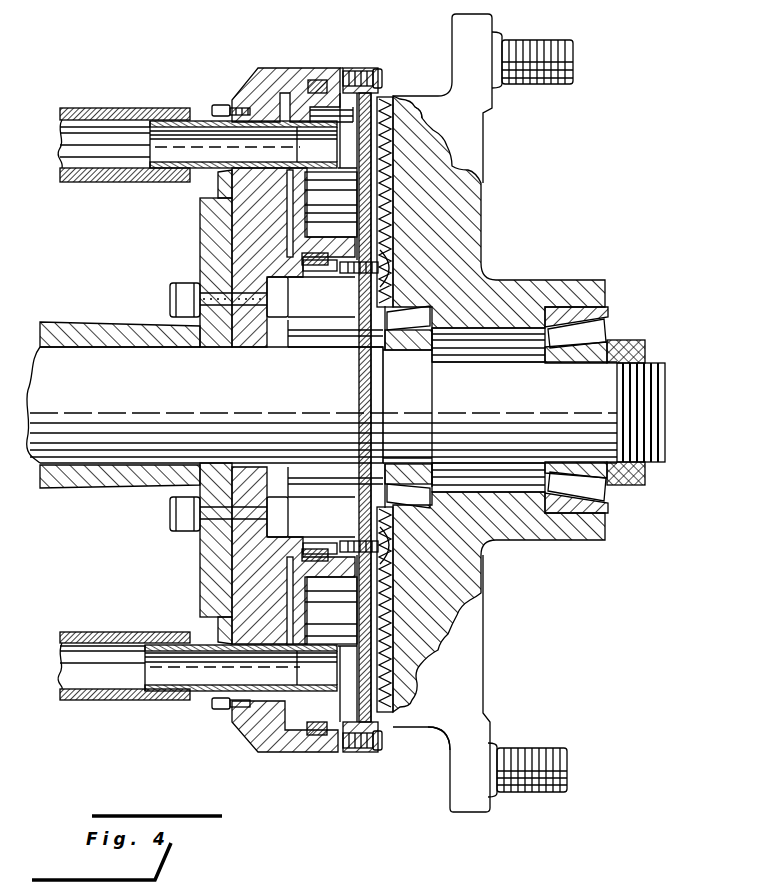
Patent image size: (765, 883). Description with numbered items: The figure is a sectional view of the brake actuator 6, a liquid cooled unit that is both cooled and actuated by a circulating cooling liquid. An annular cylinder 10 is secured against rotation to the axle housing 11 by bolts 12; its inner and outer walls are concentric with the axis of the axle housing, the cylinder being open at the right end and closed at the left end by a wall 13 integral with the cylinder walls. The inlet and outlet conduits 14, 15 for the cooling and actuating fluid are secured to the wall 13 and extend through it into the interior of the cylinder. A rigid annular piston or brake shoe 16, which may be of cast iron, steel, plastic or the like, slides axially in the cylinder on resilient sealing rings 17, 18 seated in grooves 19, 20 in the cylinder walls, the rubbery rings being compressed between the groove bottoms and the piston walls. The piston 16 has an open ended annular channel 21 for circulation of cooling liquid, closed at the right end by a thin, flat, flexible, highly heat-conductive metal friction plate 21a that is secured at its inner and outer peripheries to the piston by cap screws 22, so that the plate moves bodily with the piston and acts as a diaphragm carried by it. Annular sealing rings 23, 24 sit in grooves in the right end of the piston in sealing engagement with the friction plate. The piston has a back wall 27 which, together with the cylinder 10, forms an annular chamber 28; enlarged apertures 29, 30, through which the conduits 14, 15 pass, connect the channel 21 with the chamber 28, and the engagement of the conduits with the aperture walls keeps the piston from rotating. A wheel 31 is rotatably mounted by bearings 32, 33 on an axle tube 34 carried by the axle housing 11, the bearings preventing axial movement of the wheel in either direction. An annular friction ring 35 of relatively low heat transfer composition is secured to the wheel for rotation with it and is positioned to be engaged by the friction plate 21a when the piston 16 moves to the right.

The brake actuator 6 is at (246, 739).
The annular cylinder 10 is at (300, 68).
The axle housing 11 is at (86, 322).
The bolts 12 is at (172, 297).
The wall 13 is at (268, 486).
The inlet conduit 14 is at (204, 703).
The outlet conduit 15 is at (203, 117).
The annular piston 16 is at (356, 68).
The resilient sealing ring 17 is at (283, 297).
The resilient sealing ring 18 is at (318, 80).
The groove 19 is at (306, 253).
The groove 20 is at (316, 70).
The annular channel 21 is at (420, 108).
The friction plate 21a is at (372, 79).
The cap screws 22 is at (385, 78).
The annular sealing ring 23 is at (345, 580).
The annular sealing ring 24 is at (380, 740).
The back wall 27 is at (310, 207).
The annular chamber 28 is at (290, 622).
The enlarged aperture 29 is at (297, 683).
The enlarged aperture 30 is at (298, 142).
The wheel 31 is at (485, 150).
The bearing 32 is at (438, 347).
The bearing 33 is at (610, 322).
The axle tube 34 is at (666, 378).
The annular friction ring 35 is at (440, 727).